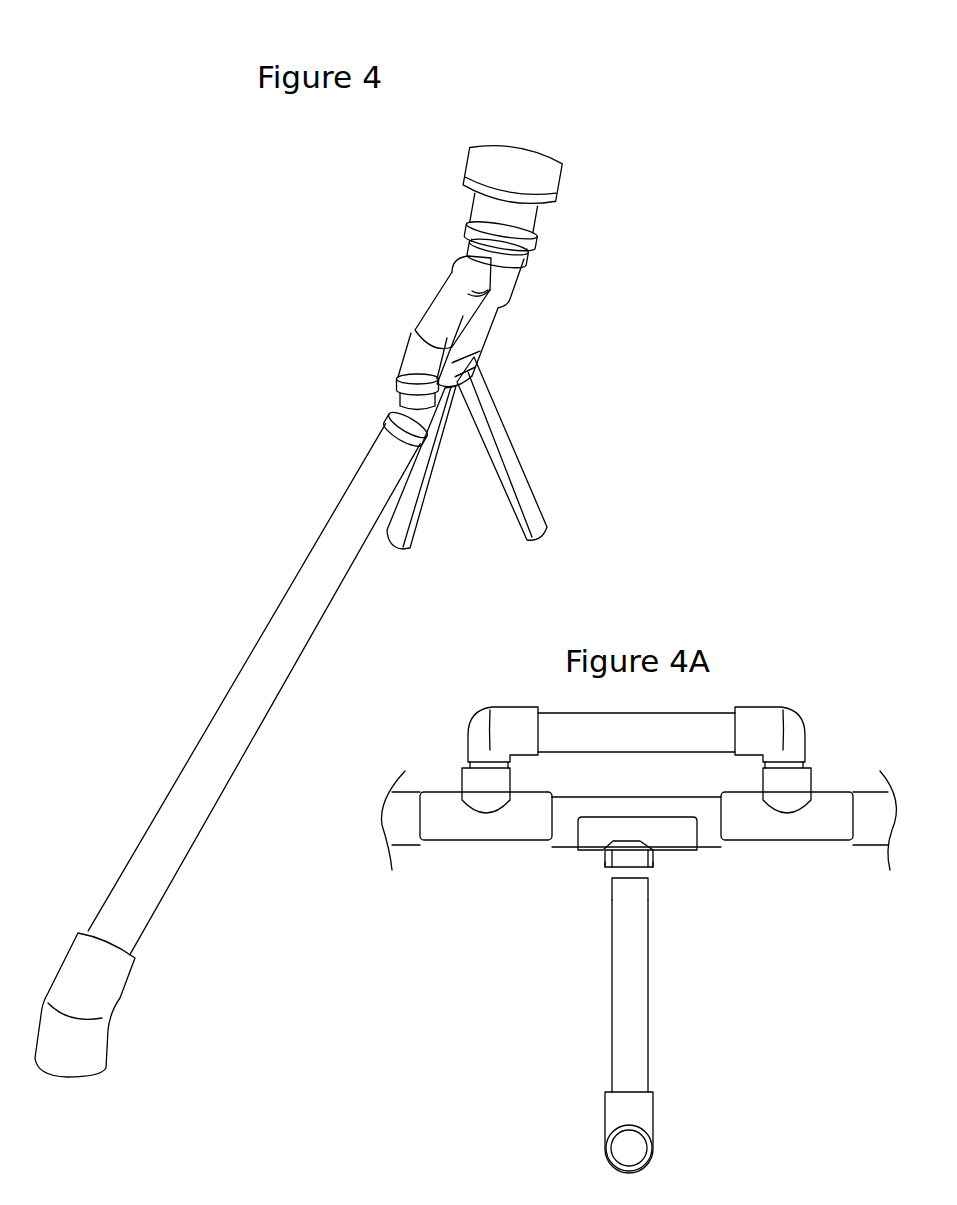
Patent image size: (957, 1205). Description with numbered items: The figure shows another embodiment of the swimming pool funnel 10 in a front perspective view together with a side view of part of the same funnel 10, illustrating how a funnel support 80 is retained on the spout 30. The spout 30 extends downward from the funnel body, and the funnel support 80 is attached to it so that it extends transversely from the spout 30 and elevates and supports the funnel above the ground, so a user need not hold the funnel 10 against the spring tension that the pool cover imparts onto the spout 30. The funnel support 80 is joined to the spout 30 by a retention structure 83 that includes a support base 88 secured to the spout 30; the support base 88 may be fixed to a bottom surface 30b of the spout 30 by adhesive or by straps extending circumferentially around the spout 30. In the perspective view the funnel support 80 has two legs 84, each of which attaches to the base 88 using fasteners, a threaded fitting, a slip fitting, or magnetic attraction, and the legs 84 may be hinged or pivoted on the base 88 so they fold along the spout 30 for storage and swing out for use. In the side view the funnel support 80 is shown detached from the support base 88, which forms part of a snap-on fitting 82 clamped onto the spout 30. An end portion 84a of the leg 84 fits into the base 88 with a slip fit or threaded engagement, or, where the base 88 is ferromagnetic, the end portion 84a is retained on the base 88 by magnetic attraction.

In FIG. 4, the swimming pool funnel 10 is at (292, 287).
In FIG. 4, the spout 30 is at (370, 470).
In FIG. 4A, the spout 30 is at (573, 806).
In FIG. 4, the bottom surface 30b is at (345, 587).
In FIG. 4, the funnel support 80 is at (519, 462).
In FIG. 4A, the funnel support 80 is at (648, 1018).
In FIG. 4A, the snap-on fitting 82 is at (686, 838).
In FIG. 4, the retention structure 83 is at (468, 359).
In FIG. 4A, the retention structure 83 is at (612, 887).
In FIG. 4, the leg 84 is at (500, 483).
In FIG. 4A, the leg 84 is at (620, 963).
In FIG. 4A, the end portion 84a is at (633, 888).
In FIG. 4, the support base 88 is at (465, 371).
In FIG. 4A, the support base 88 is at (633, 858).